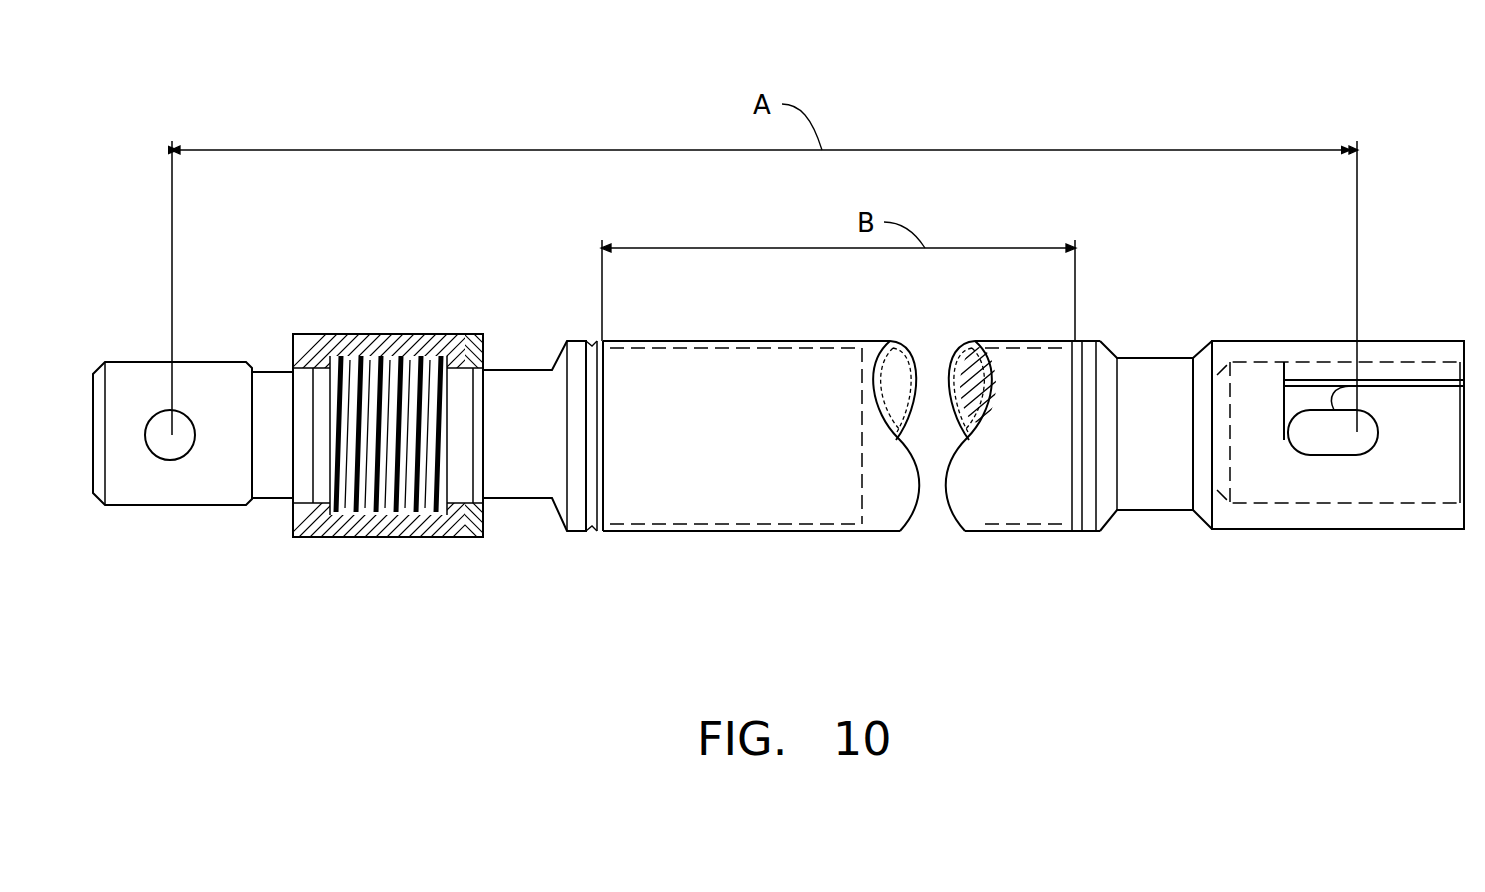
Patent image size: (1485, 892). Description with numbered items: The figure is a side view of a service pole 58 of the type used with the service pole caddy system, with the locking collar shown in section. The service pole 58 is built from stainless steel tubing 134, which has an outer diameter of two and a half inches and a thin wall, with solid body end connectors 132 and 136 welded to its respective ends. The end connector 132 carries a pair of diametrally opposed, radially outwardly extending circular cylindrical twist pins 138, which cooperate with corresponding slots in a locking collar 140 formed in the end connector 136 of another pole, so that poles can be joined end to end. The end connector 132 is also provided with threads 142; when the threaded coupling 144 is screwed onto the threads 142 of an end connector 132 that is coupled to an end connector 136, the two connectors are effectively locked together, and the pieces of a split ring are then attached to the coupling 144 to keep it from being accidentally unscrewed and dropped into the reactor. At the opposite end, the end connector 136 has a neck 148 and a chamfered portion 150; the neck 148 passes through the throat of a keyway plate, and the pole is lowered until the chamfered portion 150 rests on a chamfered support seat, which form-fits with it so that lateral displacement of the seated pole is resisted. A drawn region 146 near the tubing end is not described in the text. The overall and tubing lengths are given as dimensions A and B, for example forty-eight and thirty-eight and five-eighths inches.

The service pole 58 is at (778, 568).
The end connector 132 is at (207, 319).
The stainless steel tubing 134 is at (683, 343).
The end connector 136 is at (1328, 532).
The twist pins 138 is at (168, 452).
The locking collar 140 is at (1378, 432).
The threads 142 is at (370, 538).
The threaded coupling 144 is at (363, 336).
The neck 146 is at (488, 347).
The neck 148 is at (1151, 358).
The chamfered portion 150 is at (1200, 346).